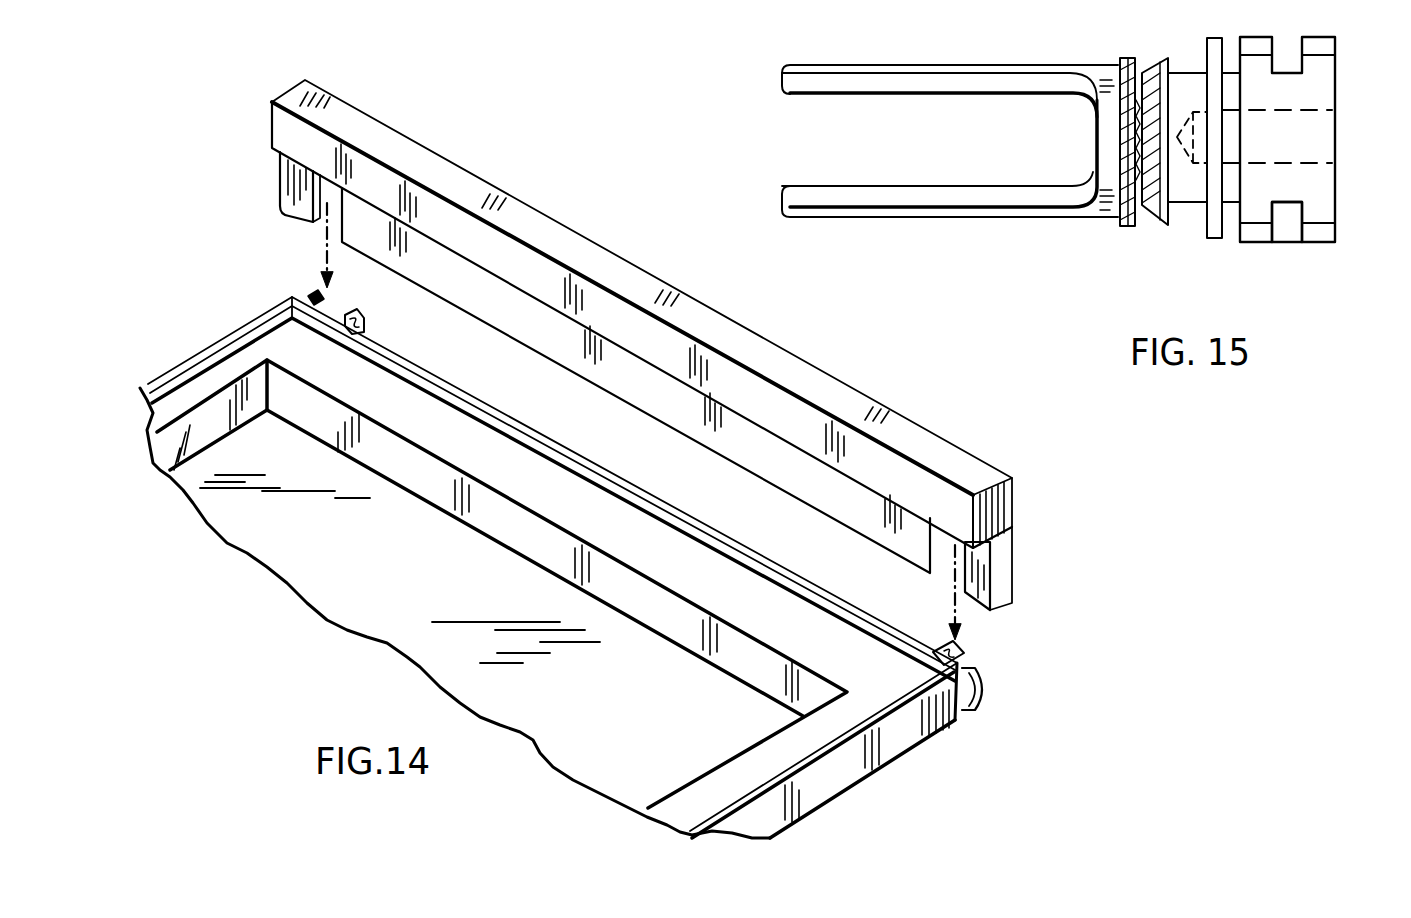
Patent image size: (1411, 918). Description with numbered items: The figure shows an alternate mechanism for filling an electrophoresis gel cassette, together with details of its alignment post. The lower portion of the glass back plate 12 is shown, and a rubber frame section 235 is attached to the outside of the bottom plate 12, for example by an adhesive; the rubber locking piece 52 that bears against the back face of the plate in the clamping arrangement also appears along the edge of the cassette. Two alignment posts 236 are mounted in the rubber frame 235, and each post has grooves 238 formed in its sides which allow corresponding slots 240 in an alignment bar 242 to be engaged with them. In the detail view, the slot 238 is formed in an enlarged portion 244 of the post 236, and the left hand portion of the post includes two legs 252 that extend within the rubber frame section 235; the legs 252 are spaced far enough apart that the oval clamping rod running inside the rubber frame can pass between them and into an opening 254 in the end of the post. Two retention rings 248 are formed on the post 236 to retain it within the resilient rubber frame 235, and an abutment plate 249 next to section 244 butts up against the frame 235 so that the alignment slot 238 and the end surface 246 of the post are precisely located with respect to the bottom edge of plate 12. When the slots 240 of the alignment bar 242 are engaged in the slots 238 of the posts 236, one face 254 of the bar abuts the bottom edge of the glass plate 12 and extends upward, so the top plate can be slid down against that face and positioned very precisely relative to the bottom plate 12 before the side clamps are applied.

In FIG. 14, the back plate 12 is at (865, 723).
In FIG. 14, the rubber locking piece 52 is at (830, 790).
In FIG. 14, the rubber frame section 235 is at (892, 753).
In FIG. 14, the alignment post 236 is at (350, 311).
In FIG. 15, the alignment post 236 is at (1103, 70).
In FIG. 14, the groove 238 is at (308, 293).
In FIG. 15, the groove 238 is at (1288, 232).
In FIG. 14, the slot 240 is at (321, 217).
In FIG. 14, the alignment bar 242 is at (510, 207).
In FIG. 15, the enlarged portion 244 is at (1318, 88).
In FIG. 15, the end surface 246 is at (1320, 160).
In FIG. 15, the retention ring 248 is at (1123, 228).
In FIG. 15, the abutment plate 249 is at (1218, 243).
In FIG. 15, the leg 252 is at (860, 200).
In FIG. 14, the face 254 is at (655, 336).